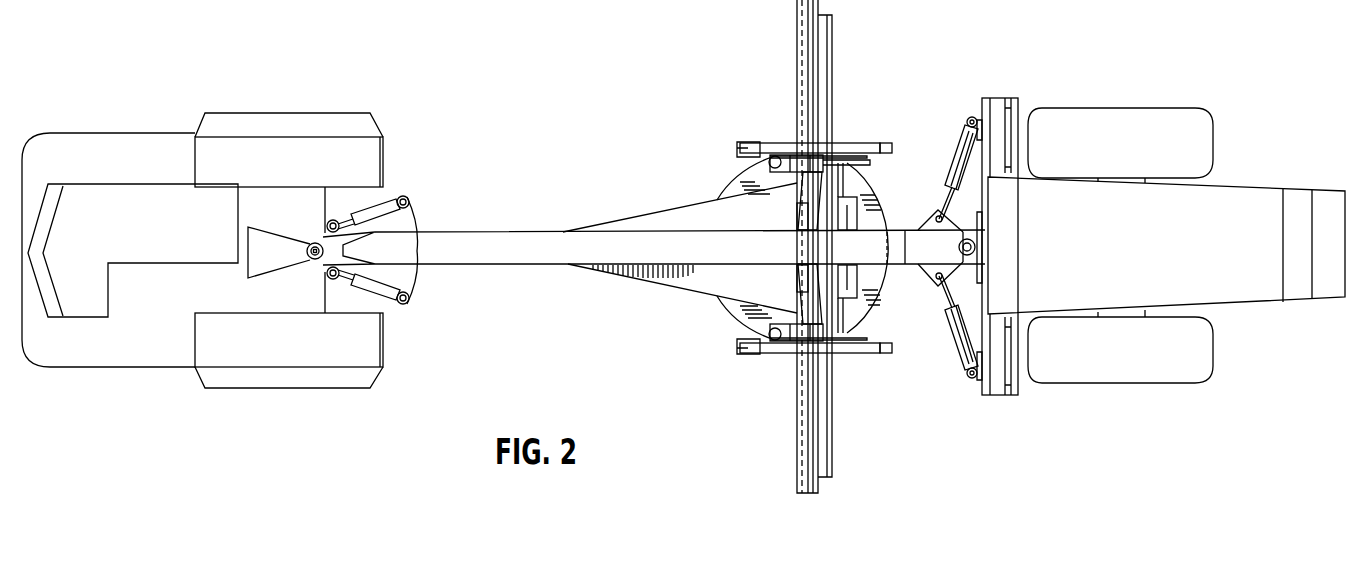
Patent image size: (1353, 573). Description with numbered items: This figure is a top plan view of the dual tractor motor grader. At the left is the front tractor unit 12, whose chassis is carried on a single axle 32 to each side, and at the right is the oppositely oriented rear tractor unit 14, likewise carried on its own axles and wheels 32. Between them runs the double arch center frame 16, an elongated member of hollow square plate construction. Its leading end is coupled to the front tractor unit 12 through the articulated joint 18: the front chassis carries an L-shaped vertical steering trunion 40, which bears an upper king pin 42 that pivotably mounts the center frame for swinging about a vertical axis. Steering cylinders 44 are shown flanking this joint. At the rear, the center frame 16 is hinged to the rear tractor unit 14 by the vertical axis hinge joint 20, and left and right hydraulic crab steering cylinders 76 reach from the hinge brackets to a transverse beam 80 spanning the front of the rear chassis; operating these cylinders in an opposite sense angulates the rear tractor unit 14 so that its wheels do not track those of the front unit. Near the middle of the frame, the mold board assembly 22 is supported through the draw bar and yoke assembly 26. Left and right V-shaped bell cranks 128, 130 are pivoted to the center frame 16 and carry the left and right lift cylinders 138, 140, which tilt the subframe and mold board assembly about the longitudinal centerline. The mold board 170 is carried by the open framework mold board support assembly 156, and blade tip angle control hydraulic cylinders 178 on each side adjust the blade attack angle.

The front tractor unit 12 is at (152, 133).
The rear tractor unit 14 is at (1220, 183).
The double arch center frame 16 is at (530, 231).
The articulated joint 18 is at (310, 228).
The vertical axis hinge joint 20 is at (977, 237).
The mold board assembly 22 is at (795, 392).
The draw bar and yoke assembly 26 is at (645, 213).
The single axle 32 is at (367, 122).
The vertical steering trunion 40 is at (267, 243).
The upper king pin 42 is at (313, 262).
The steering cylinders 44 is at (390, 197).
The hydraulic crab steering cylinders 76 is at (957, 150).
The transverse beam 80 is at (995, 97).
The left bell crank 128 is at (820, 302).
The right bell crank 130 is at (820, 190).
The left lift cylinder 138 is at (772, 346).
The right lift cylinder 140 is at (772, 157).
The mold board support assembly 156 is at (864, 163).
The mold board 170 is at (798, 42).
The blade tip angle control hydraulic cylinders 178 is at (782, 140).